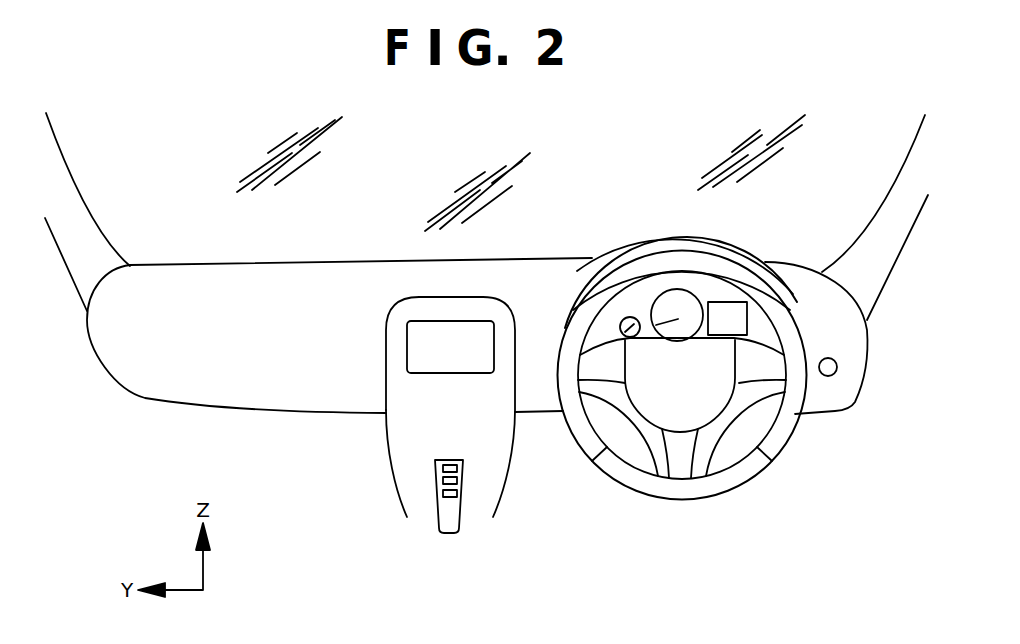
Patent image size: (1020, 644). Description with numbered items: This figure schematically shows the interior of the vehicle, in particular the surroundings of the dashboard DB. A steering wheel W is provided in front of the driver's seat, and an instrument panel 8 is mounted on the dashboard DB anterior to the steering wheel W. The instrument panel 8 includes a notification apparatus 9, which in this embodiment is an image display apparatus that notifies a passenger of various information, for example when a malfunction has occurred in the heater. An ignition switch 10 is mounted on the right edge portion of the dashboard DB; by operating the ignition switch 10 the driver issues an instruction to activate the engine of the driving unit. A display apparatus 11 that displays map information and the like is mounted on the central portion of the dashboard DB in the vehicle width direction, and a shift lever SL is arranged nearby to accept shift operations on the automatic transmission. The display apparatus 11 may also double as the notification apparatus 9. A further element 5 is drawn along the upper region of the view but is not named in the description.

The windshield 5 is at (245, 249).
The dashboard DB is at (145, 398).
The display apparatus 11 is at (406, 351).
The shift lever SL is at (462, 517).
The steering wheel W is at (762, 452).
The instrument panel 8 is at (643, 314).
The notification apparatus 9 is at (723, 302).
The ignition switch 10 is at (831, 377).